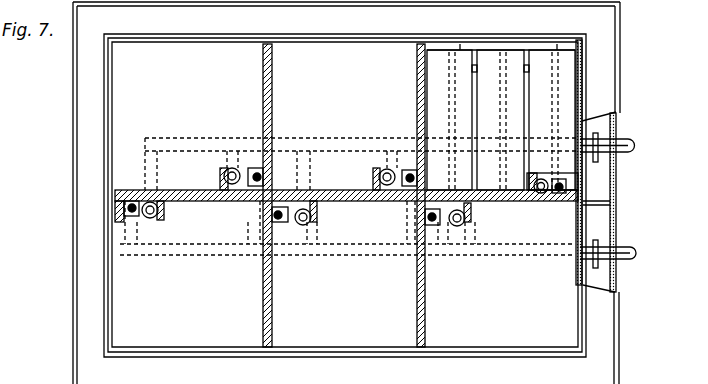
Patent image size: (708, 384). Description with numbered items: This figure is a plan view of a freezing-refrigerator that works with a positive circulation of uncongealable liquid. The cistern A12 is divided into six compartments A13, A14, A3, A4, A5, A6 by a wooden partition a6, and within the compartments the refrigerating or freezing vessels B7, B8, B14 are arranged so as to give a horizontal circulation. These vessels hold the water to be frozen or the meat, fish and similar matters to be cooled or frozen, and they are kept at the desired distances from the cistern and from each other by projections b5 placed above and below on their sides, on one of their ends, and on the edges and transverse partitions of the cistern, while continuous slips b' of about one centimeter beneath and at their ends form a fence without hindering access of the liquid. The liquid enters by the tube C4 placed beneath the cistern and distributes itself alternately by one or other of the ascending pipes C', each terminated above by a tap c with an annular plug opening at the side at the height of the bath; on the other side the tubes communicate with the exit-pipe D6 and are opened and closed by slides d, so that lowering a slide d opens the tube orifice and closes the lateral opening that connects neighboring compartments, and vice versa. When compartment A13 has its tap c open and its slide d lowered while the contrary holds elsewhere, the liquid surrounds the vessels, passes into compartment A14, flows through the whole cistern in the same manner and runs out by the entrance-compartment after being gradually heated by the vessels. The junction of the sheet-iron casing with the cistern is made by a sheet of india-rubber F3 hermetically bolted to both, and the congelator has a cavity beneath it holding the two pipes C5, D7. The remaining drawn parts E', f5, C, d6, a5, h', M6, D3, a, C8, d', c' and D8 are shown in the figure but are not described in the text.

The cistern A12 is at (331, 193).
The sheet of india-rubber F3 is at (355, 194).
The end chamber E' is at (596, 166).
The partition f5 is at (596, 205).
The pipe C is at (607, 147).
The lower pipe d6 is at (608, 254).
The upper partition a5 is at (344, 195).
The wooden partition a6 is at (358, 299).
The compartment A3 is at (346, 132).
The compartment A14 is at (343, 77).
The compartment A4 is at (189, 335).
The compartment A5 is at (341, 340).
The compartment A6 is at (501, 340).
The compartment A13 is at (501, 39).
The refrigerating or freezing vessel B14 is at (449, 120).
The refrigerating or freezing vessel B8 is at (498, 120).
The refrigerating or freezing vessel B7 is at (549, 120).
The projections b5 is at (503, 102).
The continuous slips b' is at (499, 58).
The cell centerline h' is at (502, 128).
The tube C4 is at (361, 164).
The lower conduit M6 is at (346, 228).
The ascending pipes C' is at (399, 174).
The shaft D3 is at (255, 169).
The slide d is at (342, 199).
The shaft a is at (126, 212).
The tap c is at (305, 213).
The pipe C5 is at (303, 235).
The gear C8 is at (457, 232).
The exit-pipe D6 is at (282, 224).
The bearing d' is at (334, 214).
The gear c' is at (384, 173).
The pipe D7 is at (409, 170).
The shaft D8 is at (433, 222).